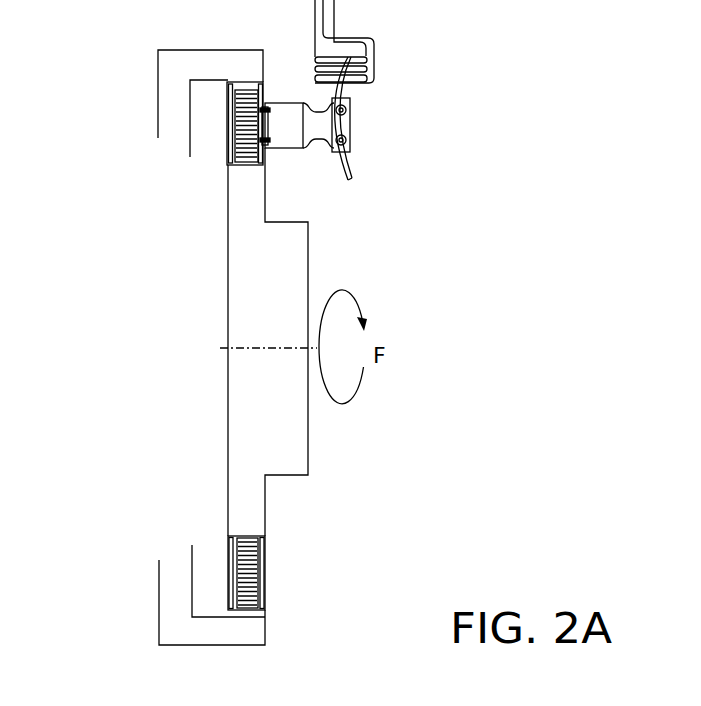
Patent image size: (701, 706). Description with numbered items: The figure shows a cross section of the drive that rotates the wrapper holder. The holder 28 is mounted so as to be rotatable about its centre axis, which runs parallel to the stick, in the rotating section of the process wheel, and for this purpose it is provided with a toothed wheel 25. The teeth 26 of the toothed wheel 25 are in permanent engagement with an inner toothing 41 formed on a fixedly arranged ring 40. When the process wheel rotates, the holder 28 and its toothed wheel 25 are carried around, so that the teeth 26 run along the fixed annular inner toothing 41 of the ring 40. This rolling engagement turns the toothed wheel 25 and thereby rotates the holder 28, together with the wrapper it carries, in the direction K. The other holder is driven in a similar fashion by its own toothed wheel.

The ring 40 is at (230, 65).
The inner toothing 41 is at (243, 82).
The toothed wheel 25 is at (240, 128).
The teeth 26 is at (240, 160).
The holder 28 is at (283, 128).